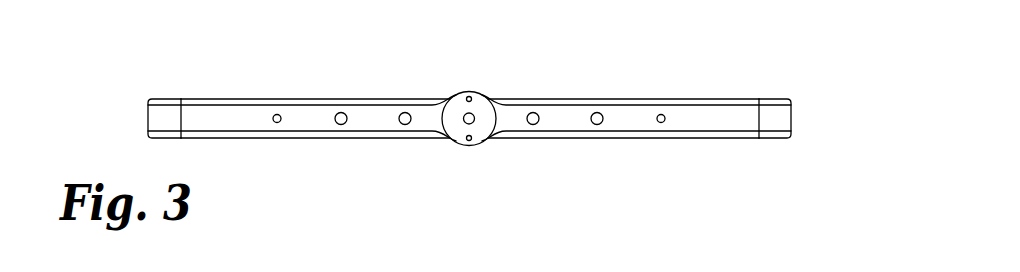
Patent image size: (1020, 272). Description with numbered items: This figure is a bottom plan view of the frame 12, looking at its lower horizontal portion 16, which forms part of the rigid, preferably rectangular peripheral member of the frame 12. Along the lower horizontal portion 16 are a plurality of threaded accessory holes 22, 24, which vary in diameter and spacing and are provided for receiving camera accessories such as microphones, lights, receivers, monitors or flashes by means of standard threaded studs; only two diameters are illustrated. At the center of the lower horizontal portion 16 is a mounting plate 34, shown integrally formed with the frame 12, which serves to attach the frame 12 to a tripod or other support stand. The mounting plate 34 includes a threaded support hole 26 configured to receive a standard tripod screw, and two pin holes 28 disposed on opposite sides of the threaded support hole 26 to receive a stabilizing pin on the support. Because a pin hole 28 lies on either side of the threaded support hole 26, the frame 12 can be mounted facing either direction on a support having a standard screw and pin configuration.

The frame 12 is at (788, 82).
The lower horizontal portion 16 is at (708, 125).
The threaded accessory hole 22 is at (337, 114).
The threaded accessory hole 24 is at (273, 115).
The threaded support hole 26 is at (464, 124).
The pin hole 28 is at (466, 97).
The mounting plate 34 is at (481, 106).